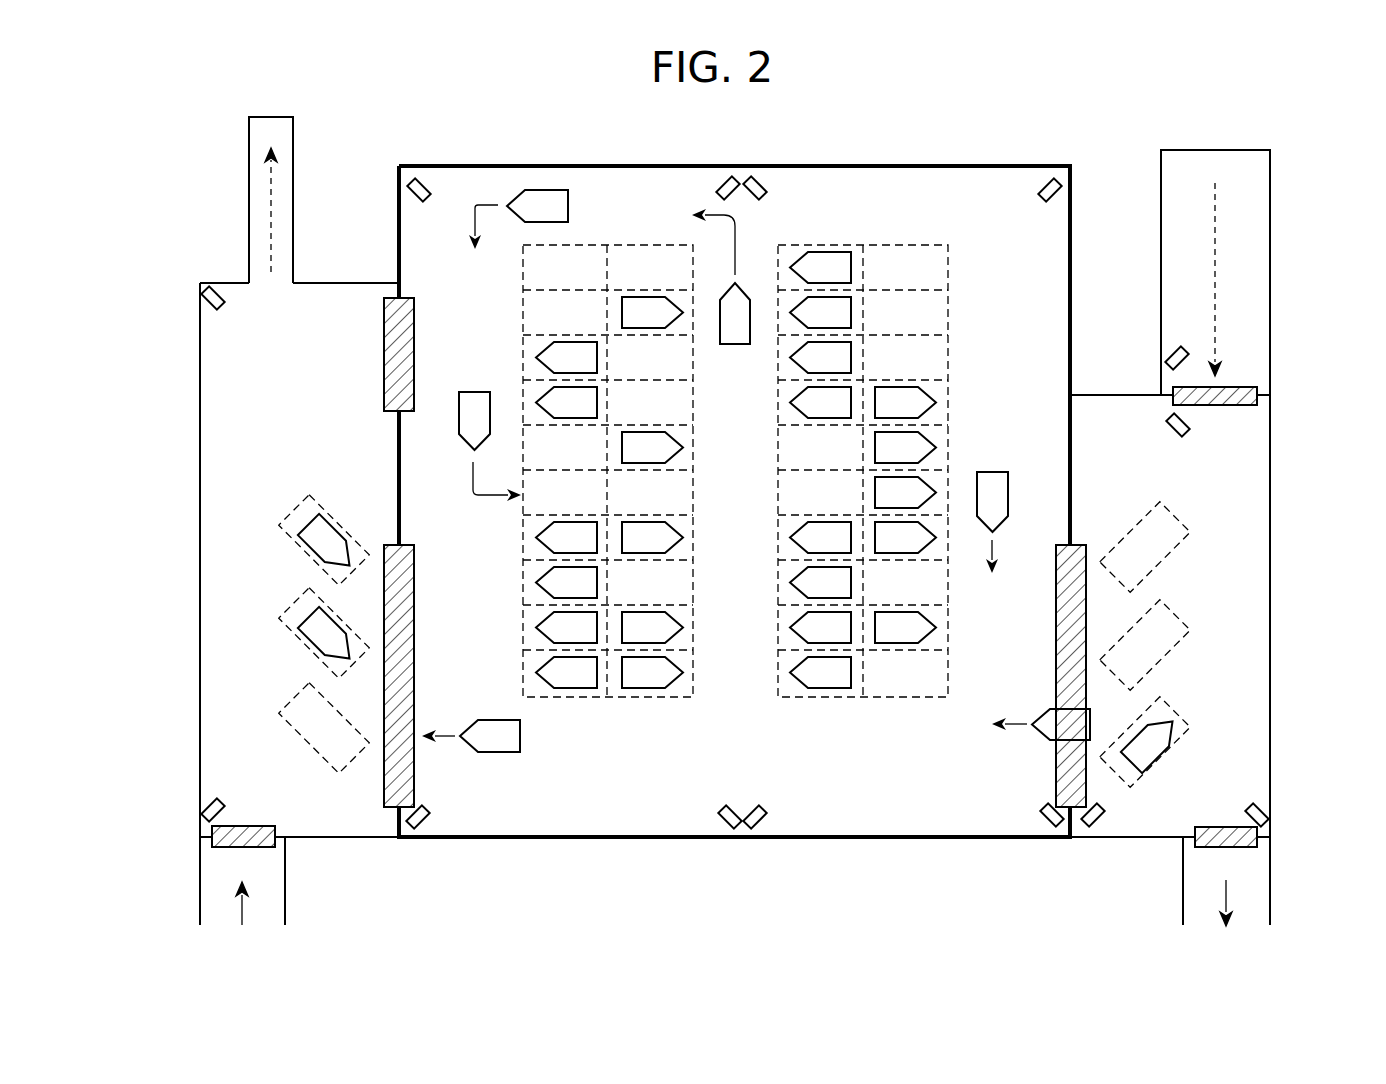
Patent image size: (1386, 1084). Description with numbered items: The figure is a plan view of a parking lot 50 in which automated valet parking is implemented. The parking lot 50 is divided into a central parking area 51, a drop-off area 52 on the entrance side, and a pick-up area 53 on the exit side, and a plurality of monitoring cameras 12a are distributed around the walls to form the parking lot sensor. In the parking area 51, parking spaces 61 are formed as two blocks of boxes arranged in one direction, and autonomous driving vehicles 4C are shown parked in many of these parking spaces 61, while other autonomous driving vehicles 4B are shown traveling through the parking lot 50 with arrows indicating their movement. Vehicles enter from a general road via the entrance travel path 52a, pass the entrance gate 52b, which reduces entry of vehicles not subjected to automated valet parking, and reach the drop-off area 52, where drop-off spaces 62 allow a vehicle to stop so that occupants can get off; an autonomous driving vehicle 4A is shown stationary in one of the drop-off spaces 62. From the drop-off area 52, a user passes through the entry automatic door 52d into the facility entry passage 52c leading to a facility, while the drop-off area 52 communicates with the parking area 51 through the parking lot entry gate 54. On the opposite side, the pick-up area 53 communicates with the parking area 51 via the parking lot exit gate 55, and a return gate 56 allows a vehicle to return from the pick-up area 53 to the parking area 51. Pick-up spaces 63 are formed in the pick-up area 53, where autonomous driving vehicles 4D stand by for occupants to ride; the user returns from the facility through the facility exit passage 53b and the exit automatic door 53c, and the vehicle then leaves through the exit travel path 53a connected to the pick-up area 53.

The parking lot 50 is at (1124, 148).
The parking area 51 is at (1000, 165).
The drop-off area 52 is at (1270, 512).
The entrance travel path 52a is at (1270, 264).
The entrance gate 52b is at (1242, 405).
The facility entry passage 52c is at (1270, 898).
The entry automatic door 52d is at (1205, 847).
The pick-up area 53 is at (200, 376).
The exit travel path 53a is at (249, 212).
The facility exit passage 53b is at (200, 902).
The exit automatic door 53c is at (262, 847).
The parking lot entry gate 54 is at (1058, 757).
The parking lot exit gate 55 is at (420, 757).
The return gate 56 is at (414, 322).
The parking space 61 is at (655, 245).
The drop-off space 62 is at (1178, 700).
The pick-up space 63 is at (302, 500).
The autonomous driving vehicle 4A is at (1165, 755).
The autonomous driving vehicle 4B is at (545, 190).
The autonomous driving vehicle 4C is at (852, 312).
The autonomous driving vehicle 4D is at (310, 533).
The monitoring camera 12a is at (422, 180).